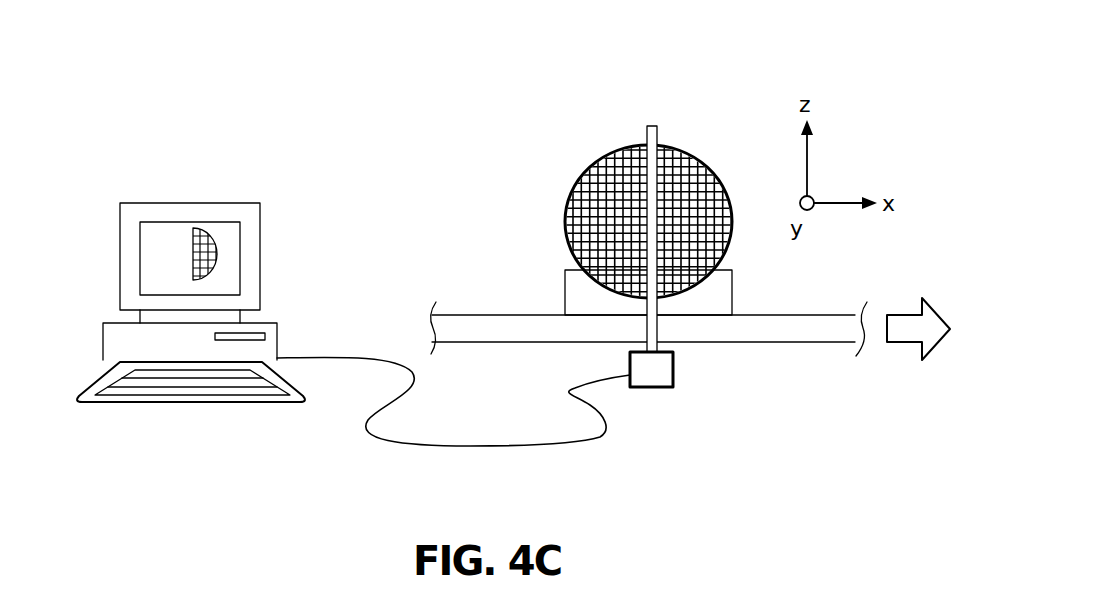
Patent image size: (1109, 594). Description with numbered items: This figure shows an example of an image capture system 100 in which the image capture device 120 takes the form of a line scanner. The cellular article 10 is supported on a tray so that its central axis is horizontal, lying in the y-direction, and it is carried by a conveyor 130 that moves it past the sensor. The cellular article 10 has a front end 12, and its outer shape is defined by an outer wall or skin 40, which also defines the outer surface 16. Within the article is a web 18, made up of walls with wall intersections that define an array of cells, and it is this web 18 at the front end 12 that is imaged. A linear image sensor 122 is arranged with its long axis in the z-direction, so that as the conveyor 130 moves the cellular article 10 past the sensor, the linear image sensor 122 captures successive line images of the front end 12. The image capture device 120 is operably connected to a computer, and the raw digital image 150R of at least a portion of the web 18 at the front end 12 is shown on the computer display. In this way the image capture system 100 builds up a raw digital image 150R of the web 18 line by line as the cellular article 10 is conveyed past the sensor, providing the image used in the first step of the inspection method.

The image capture system 100 is at (779, 60).
The image capture device 120 is at (139, 185).
The raw digital image 150R is at (200, 233).
The linear image sensor 122 is at (653, 126).
The cellular article 10 is at (614, 202).
The outer surface 16 is at (626, 201).
The outer wall or skin 40 is at (628, 145).
The web 18 is at (604, 220).
The front end 12 is at (694, 220).
The conveyor 130 is at (517, 315).